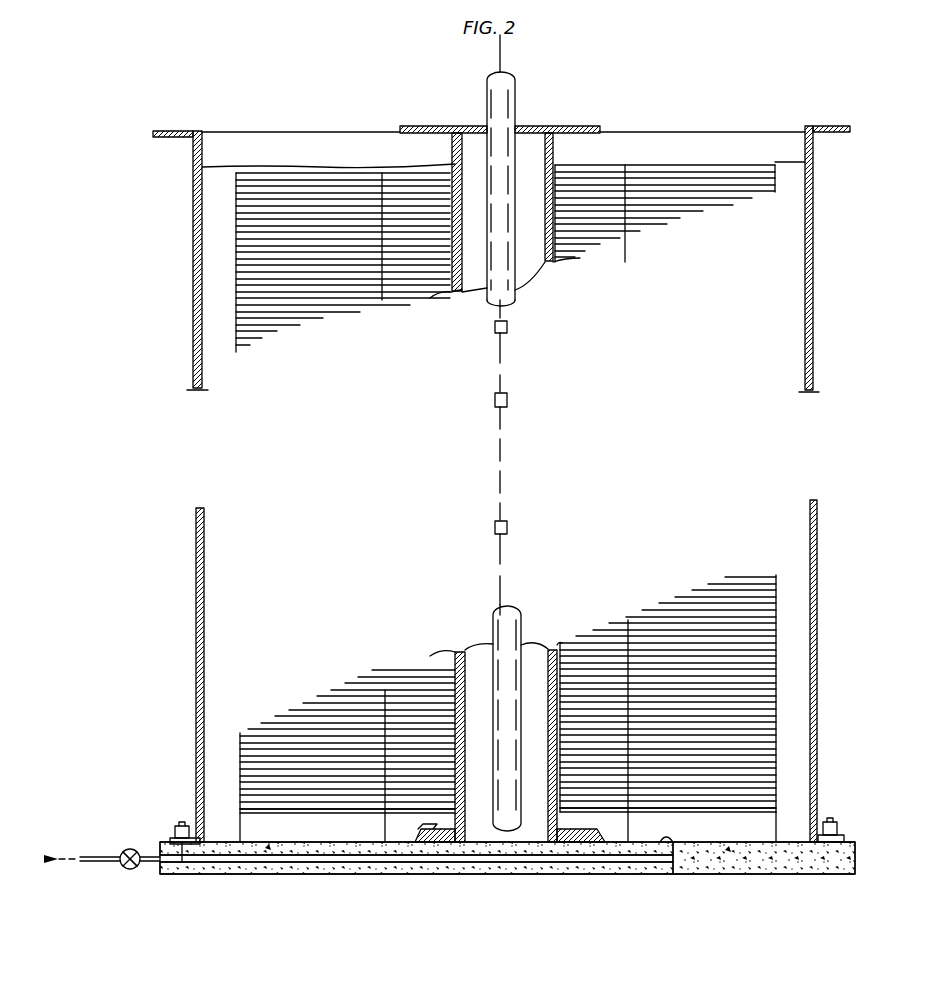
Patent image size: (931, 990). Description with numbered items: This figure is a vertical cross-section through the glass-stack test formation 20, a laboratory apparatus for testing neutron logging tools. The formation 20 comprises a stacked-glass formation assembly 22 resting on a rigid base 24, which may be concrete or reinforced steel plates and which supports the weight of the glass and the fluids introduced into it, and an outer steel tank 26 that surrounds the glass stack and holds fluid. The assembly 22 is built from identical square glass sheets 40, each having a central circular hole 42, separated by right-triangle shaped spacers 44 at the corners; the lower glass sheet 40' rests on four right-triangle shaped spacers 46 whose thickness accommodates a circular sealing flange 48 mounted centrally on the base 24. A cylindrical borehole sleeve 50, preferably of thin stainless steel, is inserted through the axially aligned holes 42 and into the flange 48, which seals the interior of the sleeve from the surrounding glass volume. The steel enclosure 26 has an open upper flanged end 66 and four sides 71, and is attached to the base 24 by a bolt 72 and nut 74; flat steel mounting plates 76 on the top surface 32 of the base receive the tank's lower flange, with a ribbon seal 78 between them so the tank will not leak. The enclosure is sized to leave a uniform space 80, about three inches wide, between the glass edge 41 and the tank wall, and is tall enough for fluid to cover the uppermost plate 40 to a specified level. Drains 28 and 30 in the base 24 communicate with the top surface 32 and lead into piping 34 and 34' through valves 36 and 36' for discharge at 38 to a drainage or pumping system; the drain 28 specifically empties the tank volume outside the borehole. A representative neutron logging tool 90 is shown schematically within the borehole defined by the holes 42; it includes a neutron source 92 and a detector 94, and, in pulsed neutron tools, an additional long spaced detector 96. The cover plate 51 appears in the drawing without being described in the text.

The glass-stack test formation 20 is at (340, 88).
The stacked-glass formation assembly 22 is at (699, 162).
The rigid base 24 is at (845, 860).
The outer steel tank 26 is at (815, 232).
The drain 28 is at (674, 836).
The drain 30 is at (512, 840).
The top surface of the base 32 is at (222, 842).
The piping 34 is at (408, 874).
The piping 34' is at (568, 877).
The valve 36 is at (136, 888).
The valve 36' is at (130, 859).
The discharge 38 is at (62, 864).
The square glass sheets 40 is at (535, 492).
The lower glass sheet 40' is at (464, 798).
The glass edge 41 is at (774, 162).
The central circular hole 42 is at (554, 180).
The right-triangle shaped spacers 44 is at (772, 810).
The right-triangle shaped spacers 46 is at (268, 846).
The circular sealing flange 48 is at (430, 844).
The borehole cylinder 50 is at (462, 140).
The cover plate 51 is at (216, 170).
The open upper flanged end 66 is at (172, 132).
The sides 71 is at (816, 600).
The bolt 72 is at (840, 823).
The nut 74 is at (848, 840).
The mounting surface 76 is at (198, 845).
The ribbon seal 78 is at (170, 840).
The uniform space 80 is at (789, 188).
The neutron logging tool 90 is at (516, 96).
The neutron source 92 is at (510, 526).
The detector 94 is at (506, 402).
The long spaced detector 96 is at (512, 326).